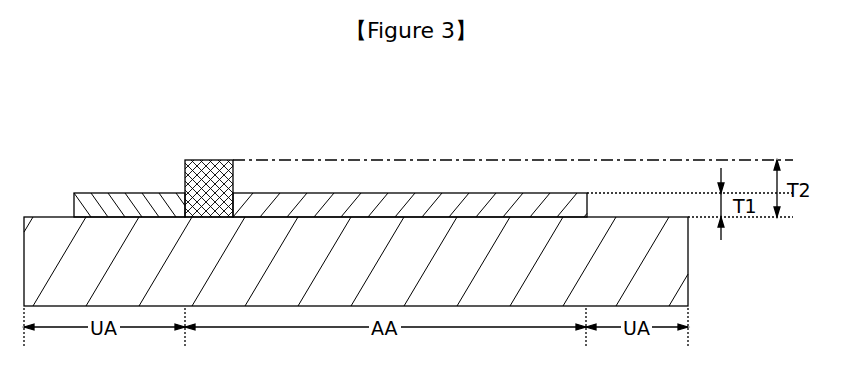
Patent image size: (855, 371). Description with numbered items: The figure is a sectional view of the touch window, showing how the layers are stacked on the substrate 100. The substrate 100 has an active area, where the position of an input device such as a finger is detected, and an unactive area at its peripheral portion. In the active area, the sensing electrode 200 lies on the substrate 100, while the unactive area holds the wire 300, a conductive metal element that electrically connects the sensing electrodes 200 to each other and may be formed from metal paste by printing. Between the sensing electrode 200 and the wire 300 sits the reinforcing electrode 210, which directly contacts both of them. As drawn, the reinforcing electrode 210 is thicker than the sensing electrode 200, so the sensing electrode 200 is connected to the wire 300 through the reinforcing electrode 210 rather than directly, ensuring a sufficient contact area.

The substrate 100 is at (688, 260).
The sensing electrode 200 is at (385, 193).
The reinforcing electrode 210 is at (213, 160).
The wire 300 is at (108, 192).